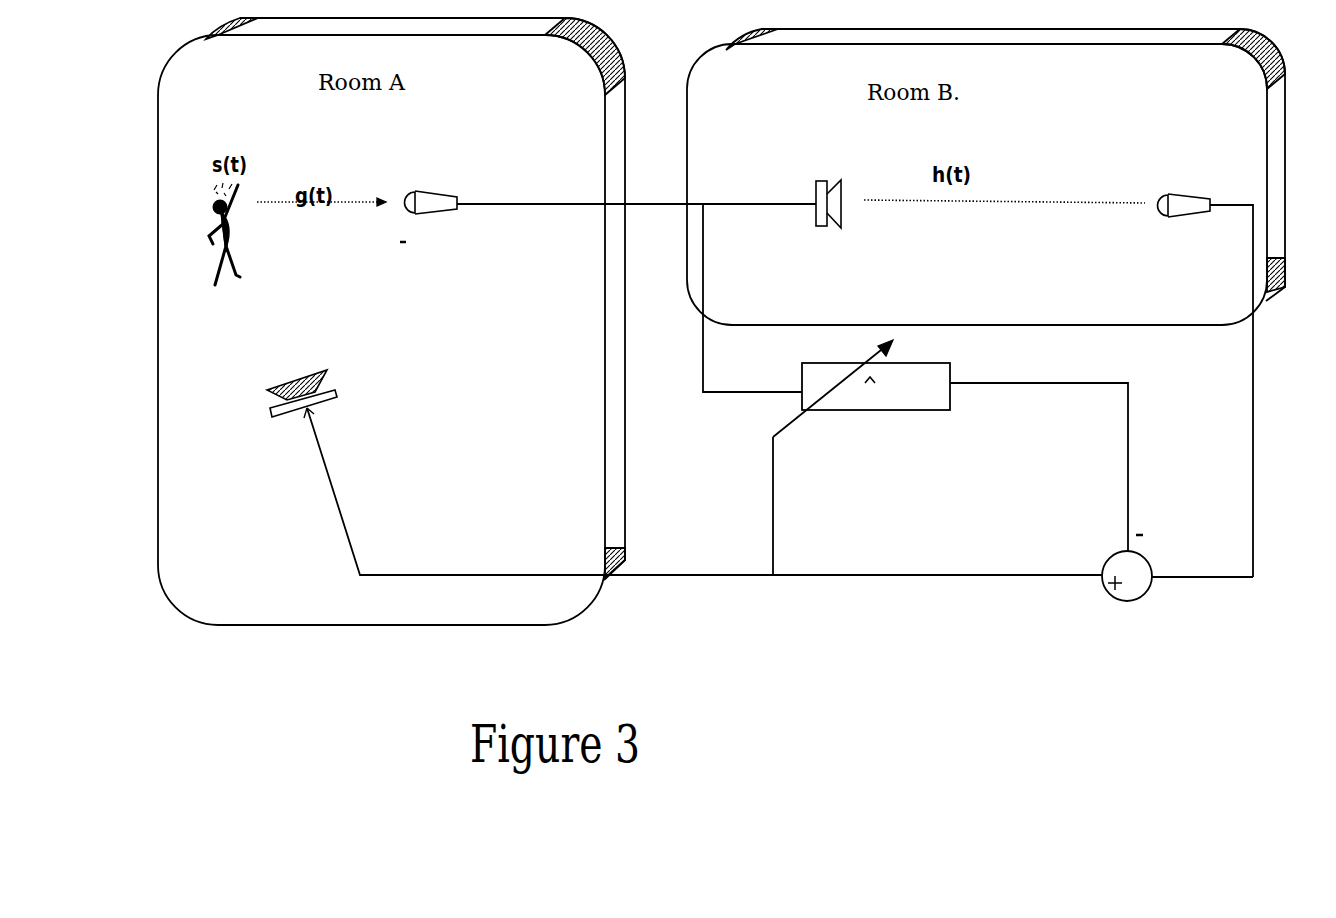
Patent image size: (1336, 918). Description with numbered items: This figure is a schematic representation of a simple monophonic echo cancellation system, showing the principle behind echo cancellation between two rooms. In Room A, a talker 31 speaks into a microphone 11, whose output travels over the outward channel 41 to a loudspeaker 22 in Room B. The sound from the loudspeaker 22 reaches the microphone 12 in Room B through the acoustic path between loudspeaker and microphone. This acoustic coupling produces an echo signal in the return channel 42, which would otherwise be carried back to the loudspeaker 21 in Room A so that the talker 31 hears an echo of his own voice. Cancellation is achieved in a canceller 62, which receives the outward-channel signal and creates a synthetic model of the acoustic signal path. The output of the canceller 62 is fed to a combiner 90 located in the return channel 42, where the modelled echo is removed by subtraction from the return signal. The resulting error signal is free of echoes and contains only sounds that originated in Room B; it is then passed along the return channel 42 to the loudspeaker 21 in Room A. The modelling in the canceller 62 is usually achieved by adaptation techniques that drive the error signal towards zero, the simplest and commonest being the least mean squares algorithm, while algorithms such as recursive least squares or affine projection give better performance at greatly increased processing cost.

The microphone 11 is at (428, 194).
The microphone 12 is at (1206, 355).
The loudspeaker 21 is at (322, 393).
The loudspeaker 22 is at (831, 180).
The talker 31 is at (241, 234).
The outward channel 41 is at (636, 181).
The return channel 42 is at (703, 521).
The canceller 62 is at (861, 457).
The combiner 90 is at (1177, 592).